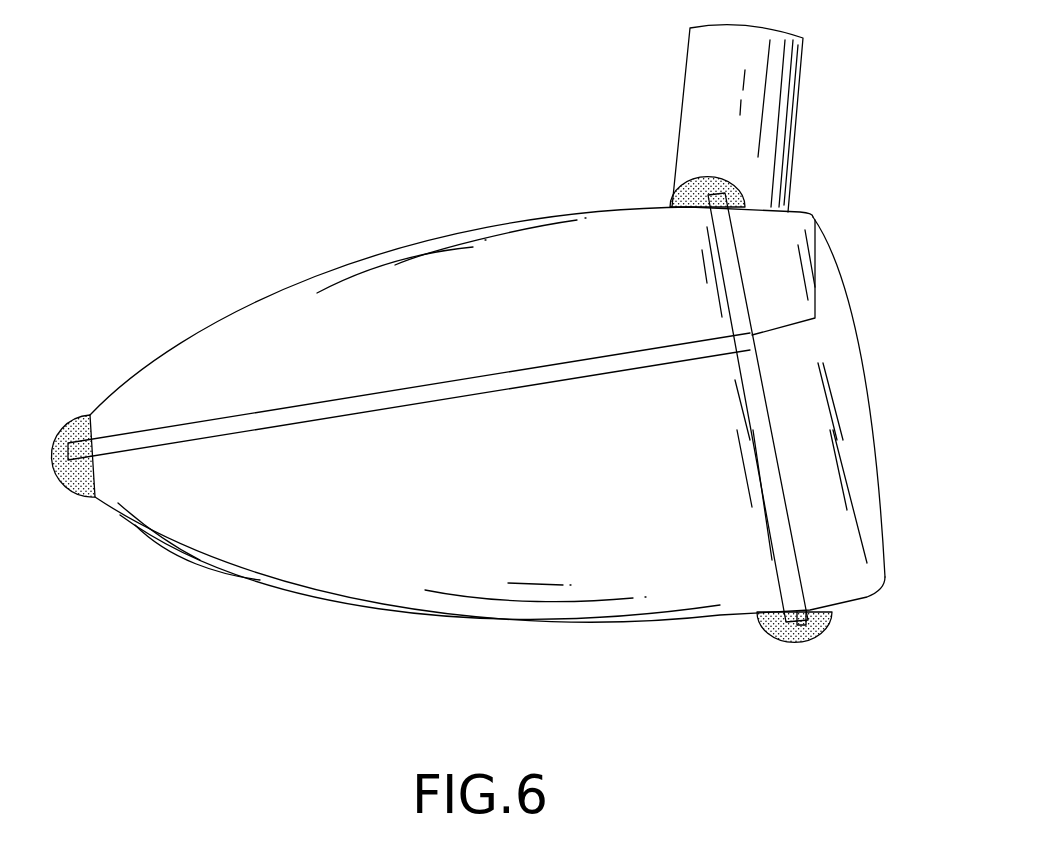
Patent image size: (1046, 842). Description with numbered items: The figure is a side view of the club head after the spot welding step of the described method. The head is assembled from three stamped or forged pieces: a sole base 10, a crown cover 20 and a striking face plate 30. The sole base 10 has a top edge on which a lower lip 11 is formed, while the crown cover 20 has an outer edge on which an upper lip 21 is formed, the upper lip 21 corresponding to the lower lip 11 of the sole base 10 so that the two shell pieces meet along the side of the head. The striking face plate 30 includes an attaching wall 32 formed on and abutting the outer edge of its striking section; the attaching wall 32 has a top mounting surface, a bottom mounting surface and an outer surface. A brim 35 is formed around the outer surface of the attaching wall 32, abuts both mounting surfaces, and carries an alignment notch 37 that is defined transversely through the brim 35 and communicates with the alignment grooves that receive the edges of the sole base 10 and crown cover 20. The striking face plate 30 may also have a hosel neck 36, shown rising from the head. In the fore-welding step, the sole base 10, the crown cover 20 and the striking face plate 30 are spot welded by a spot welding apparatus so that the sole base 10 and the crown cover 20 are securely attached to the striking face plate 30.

The sole base 10 is at (477, 592).
The lower lip 11 is at (505, 388).
The crown cover 20 is at (415, 260).
The upper lip 21 is at (515, 377).
The striking face plate 30 is at (848, 263).
The attaching wall 32 is at (835, 570).
The brim 35 is at (807, 643).
The hosel neck 36 is at (760, 108).
The alignment notch 37 is at (748, 353).